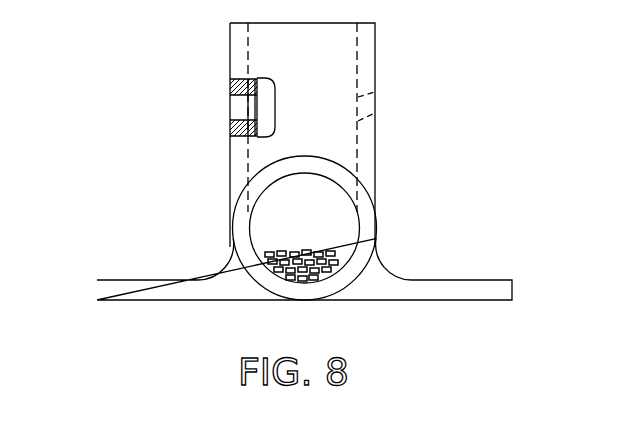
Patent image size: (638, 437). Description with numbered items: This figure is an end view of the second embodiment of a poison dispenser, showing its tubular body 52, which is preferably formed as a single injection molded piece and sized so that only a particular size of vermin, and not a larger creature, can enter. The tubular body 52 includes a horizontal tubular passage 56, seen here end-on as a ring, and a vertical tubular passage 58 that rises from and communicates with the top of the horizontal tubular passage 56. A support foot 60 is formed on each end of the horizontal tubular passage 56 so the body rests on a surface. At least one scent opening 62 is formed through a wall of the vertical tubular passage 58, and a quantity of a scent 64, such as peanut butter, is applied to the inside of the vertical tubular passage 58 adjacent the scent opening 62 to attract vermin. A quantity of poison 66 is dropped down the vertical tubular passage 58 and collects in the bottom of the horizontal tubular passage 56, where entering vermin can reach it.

The tubular body 52 is at (137, 153).
The horizontal tubular passage 56 is at (253, 271).
The vertical tubular passage 58 is at (376, 52).
The support foot 60 is at (463, 278).
The scent opening 62 is at (230, 113).
The scent 64 is at (231, 84).
The poison 66 is at (334, 252).